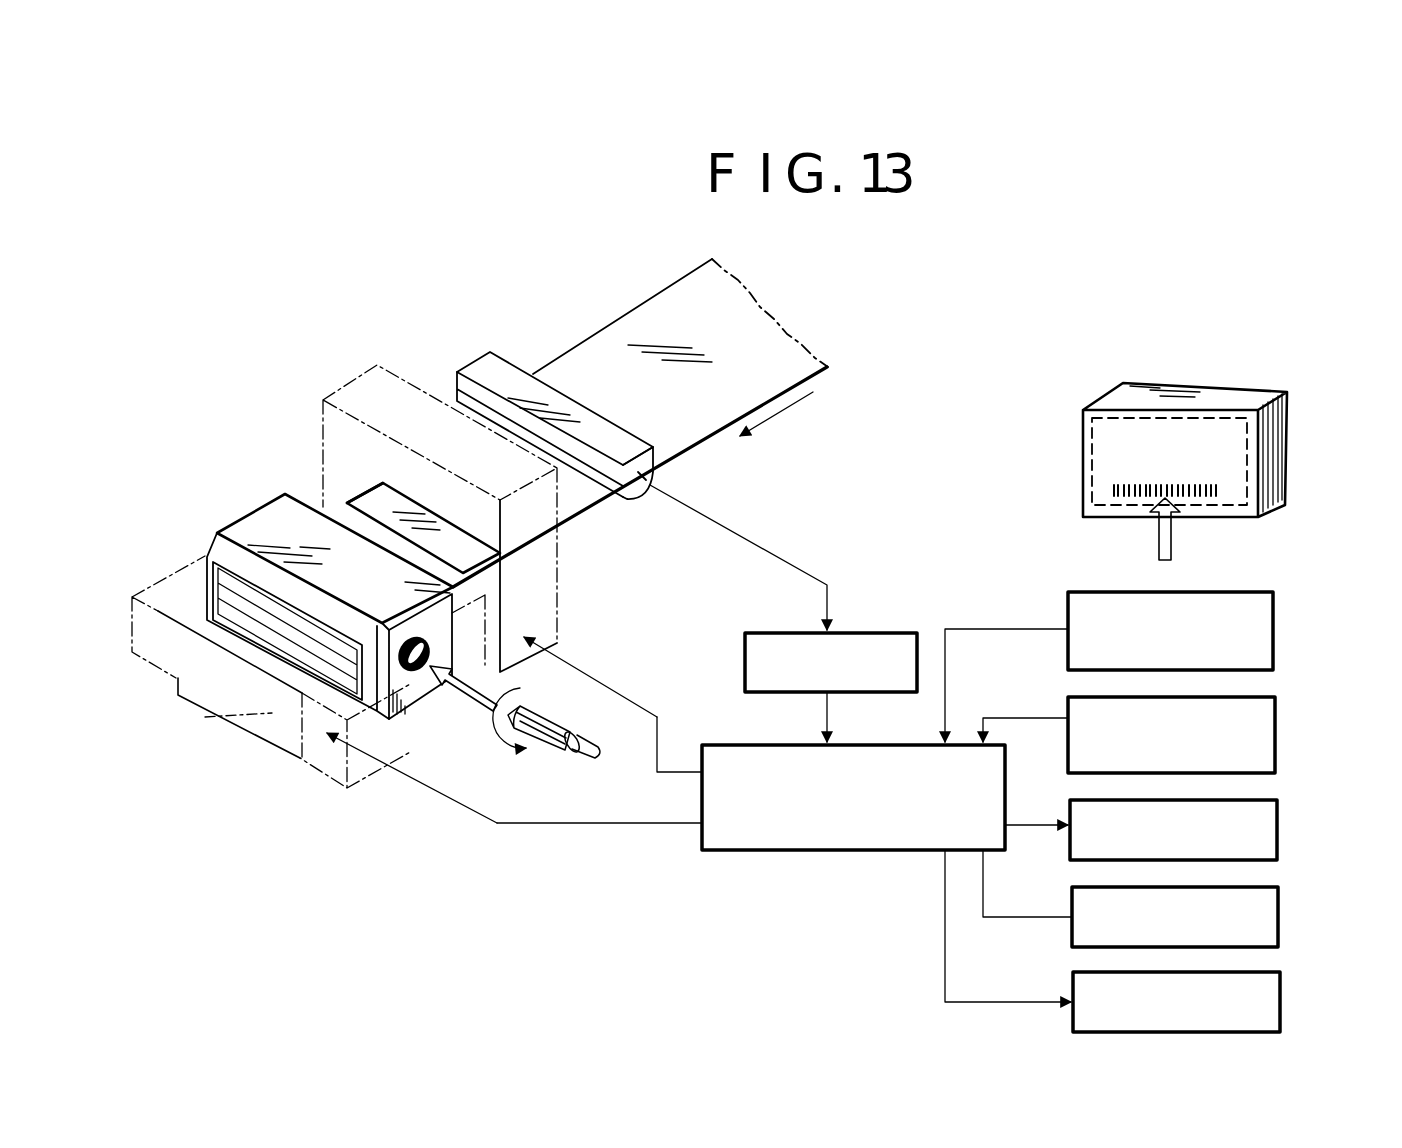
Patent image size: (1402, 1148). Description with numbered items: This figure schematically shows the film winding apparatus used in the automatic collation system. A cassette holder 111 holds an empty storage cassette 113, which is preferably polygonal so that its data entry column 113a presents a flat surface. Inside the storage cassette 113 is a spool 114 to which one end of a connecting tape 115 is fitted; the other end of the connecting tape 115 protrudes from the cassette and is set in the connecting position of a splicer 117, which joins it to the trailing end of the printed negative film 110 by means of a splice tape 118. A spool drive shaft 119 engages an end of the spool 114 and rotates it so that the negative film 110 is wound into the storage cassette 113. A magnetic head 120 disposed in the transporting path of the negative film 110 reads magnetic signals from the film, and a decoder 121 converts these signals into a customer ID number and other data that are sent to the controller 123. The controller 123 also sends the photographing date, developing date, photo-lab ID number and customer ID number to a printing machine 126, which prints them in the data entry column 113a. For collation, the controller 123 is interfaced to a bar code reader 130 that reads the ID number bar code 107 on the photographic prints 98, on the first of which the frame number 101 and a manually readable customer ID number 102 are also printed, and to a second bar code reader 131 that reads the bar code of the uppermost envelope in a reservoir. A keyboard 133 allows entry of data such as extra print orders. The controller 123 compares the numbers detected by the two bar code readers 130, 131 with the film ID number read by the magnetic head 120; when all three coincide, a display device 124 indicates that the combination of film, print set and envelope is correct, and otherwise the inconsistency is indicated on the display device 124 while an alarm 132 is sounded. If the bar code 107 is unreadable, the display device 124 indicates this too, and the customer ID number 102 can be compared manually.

The prints 98 is at (1090, 420).
The frame number 101 is at (1187, 433).
The customer ID number 102 is at (1107, 473).
The ID number bar code 107 is at (1107, 487).
The negative film 110 is at (650, 298).
The cassette holder 111 is at (372, 782).
The storage cassette 113 is at (254, 510).
The data entry column 113a is at (210, 560).
The spool 114 is at (412, 675).
The connecting tape 115 is at (322, 503).
The splicer 117 is at (558, 587).
The splice tape 118 is at (327, 505).
The spool drive shaft 119 is at (555, 752).
The magnetic head 120 is at (497, 352).
The decoder 121 is at (912, 633).
The controller 123 is at (893, 851).
The display device 124 is at (1275, 822).
The printing machine 126 is at (272, 713).
The bar code reader 130 is at (1270, 591).
The second bar code reader 131 is at (1273, 715).
The alarm 132 is at (1278, 994).
The keyboard 133 is at (1276, 908).